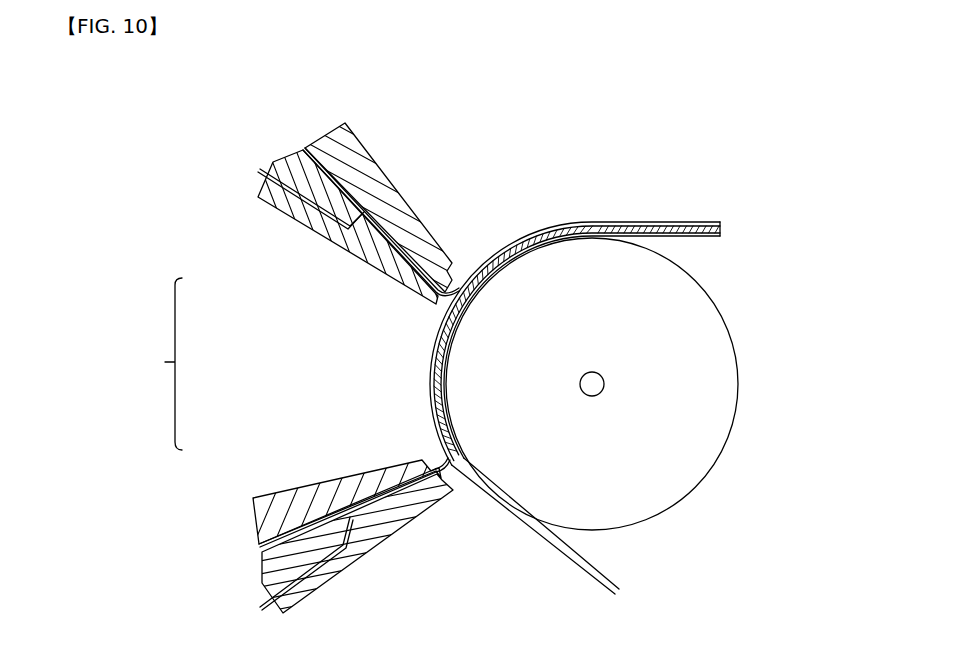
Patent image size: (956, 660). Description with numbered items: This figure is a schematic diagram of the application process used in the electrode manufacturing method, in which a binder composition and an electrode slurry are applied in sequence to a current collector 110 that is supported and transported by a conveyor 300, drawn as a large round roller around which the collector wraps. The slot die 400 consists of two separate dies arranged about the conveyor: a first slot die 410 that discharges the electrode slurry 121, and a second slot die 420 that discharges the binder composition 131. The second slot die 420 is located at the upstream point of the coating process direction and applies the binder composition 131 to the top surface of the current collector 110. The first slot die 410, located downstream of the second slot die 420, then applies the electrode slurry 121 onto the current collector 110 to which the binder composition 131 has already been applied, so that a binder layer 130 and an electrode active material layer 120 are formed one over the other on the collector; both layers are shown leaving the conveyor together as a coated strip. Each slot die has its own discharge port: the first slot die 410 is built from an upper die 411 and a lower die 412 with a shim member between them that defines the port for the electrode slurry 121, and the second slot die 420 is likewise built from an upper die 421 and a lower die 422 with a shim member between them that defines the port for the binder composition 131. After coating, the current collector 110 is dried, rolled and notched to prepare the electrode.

The current collector 110 is at (545, 546).
The electrode active material layer 120 is at (722, 222).
The electrode slurry 121 is at (256, 175).
The binder layer 130 is at (722, 235).
The binder composition 131 is at (262, 605).
The conveyor 300 is at (713, 470).
The slot die 400 is at (156, 364).
The first slot die 410 is at (250, 224).
The upper die 411 is at (384, 172).
The lower die 412 is at (337, 246).
The second slot die 420 is at (243, 512).
The upper die 421 is at (305, 487).
The lower die 422 is at (375, 548).